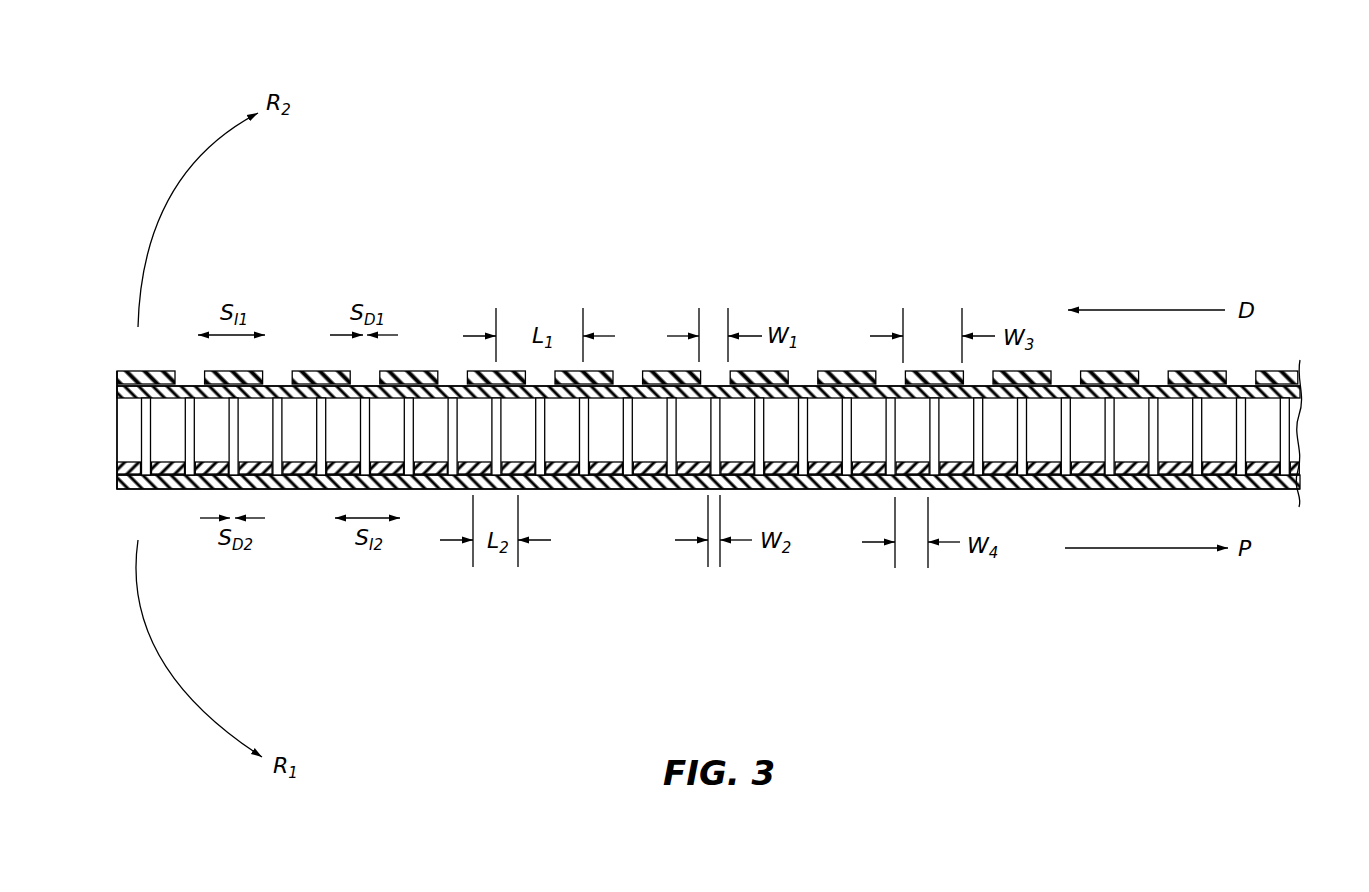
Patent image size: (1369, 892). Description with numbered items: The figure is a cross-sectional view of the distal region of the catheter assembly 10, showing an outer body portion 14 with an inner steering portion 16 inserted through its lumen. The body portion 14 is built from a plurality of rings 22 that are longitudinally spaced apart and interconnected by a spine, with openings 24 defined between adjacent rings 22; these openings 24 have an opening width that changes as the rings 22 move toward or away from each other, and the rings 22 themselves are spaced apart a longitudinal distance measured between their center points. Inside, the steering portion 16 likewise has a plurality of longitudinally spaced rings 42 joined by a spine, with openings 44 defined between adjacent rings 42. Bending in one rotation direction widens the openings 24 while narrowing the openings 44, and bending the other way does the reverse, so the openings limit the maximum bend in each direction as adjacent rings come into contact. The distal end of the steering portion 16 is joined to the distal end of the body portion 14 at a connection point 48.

The catheter assembly 10 is at (912, 192).
The body portion 14 is at (1281, 362).
The steering portion 16 is at (113, 463).
The rings 22 is at (925, 372).
The openings 24 is at (982, 378).
The rings 42 is at (912, 475).
The openings 44 is at (933, 441).
The connection point 48 is at (138, 488).